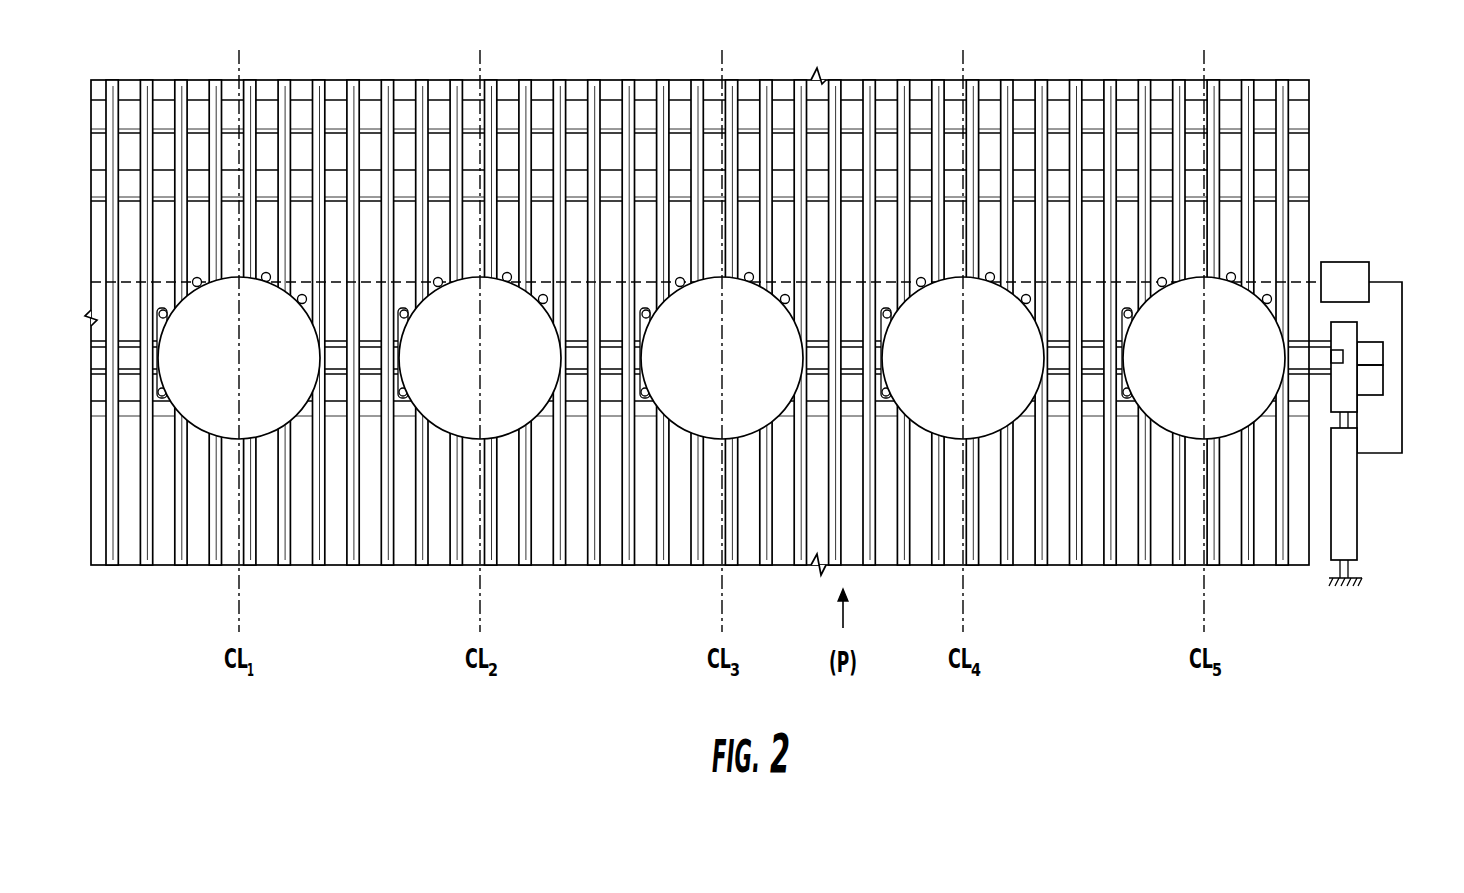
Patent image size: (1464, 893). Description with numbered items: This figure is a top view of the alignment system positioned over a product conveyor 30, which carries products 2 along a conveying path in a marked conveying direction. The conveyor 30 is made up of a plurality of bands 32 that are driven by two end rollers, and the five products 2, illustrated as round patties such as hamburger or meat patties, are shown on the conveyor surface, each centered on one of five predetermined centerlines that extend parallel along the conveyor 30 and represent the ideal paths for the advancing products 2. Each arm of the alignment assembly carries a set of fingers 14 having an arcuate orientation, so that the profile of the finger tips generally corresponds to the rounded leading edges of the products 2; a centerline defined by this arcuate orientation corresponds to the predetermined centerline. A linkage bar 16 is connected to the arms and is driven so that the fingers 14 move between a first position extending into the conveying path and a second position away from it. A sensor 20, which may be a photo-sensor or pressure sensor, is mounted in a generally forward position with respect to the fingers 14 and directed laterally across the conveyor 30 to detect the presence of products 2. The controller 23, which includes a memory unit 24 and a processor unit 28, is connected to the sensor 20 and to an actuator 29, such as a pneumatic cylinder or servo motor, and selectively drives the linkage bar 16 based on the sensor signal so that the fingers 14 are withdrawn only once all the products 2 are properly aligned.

The products 2 is at (462, 407).
The fingers 14 is at (167, 319).
The linkage bar 16 is at (576, 352).
The sensor 20 is at (1344, 277).
The controller 23 is at (1385, 355).
The memory unit 24 is at (1377, 381).
The processor unit 28 is at (1372, 340).
The actuator 29 is at (1339, 532).
The product conveyor 30 is at (789, 74).
The bands 32 is at (908, 99).